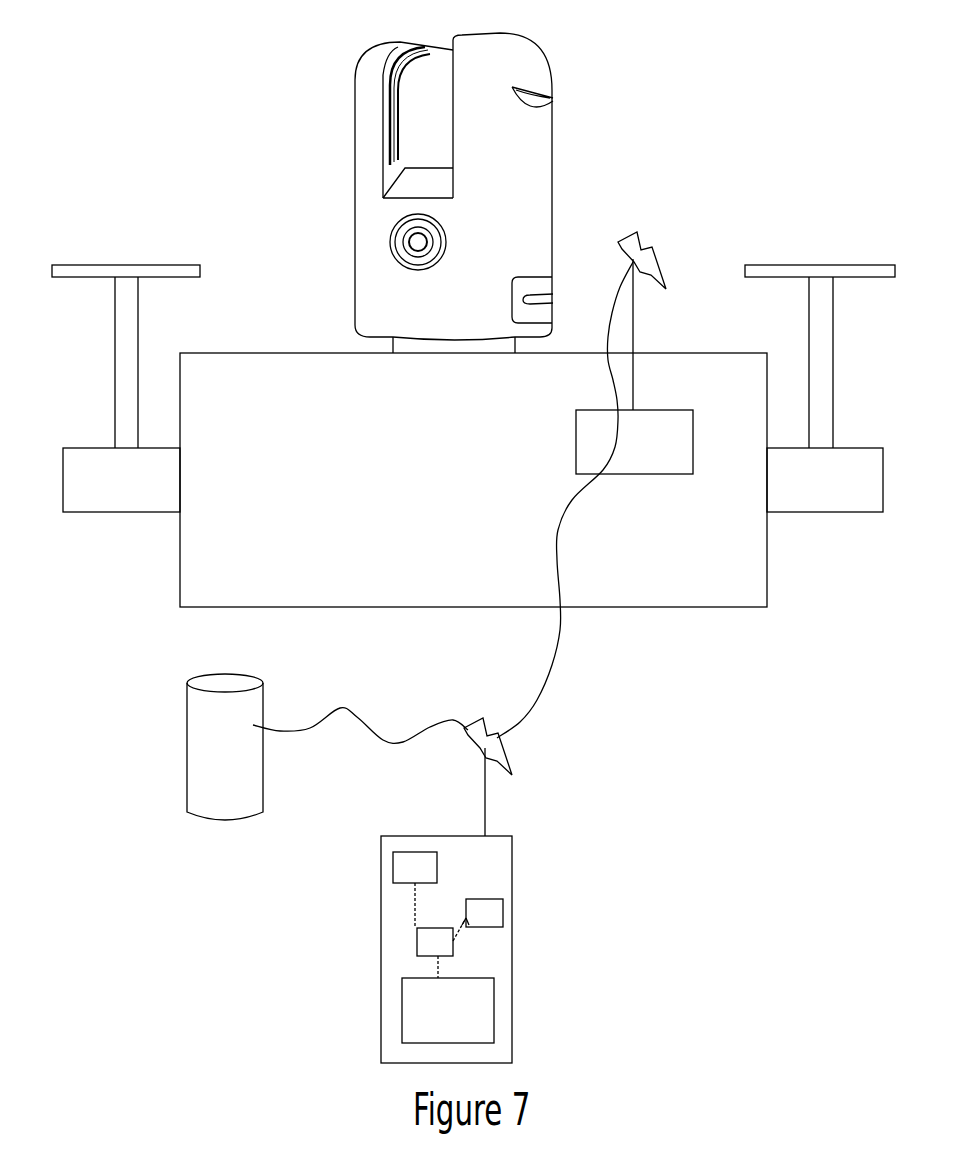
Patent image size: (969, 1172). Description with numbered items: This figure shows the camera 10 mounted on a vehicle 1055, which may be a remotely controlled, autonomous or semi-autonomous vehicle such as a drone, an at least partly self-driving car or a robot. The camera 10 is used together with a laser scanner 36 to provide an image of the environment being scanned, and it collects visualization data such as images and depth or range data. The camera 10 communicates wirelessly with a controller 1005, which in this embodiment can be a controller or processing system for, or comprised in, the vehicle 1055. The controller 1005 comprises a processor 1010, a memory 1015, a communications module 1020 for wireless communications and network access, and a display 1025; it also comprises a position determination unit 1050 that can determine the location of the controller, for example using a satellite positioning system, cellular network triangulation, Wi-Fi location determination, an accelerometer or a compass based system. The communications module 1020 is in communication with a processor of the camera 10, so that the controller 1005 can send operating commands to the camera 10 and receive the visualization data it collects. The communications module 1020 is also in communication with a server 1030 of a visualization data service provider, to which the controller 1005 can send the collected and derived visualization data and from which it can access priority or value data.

The camera 10 is at (540, 130).
The laser scanner 36 is at (417, 114).
The vehicle 1055 is at (693, 587).
The server 1030 is at (205, 763).
The communications module 1020 is at (487, 798).
The controller 1005 is at (513, 958).
The memory 1015 is at (411, 868).
The processor 1010 is at (423, 939).
The position determination unit 1050 is at (483, 914).
The display 1025 is at (482, 1009).